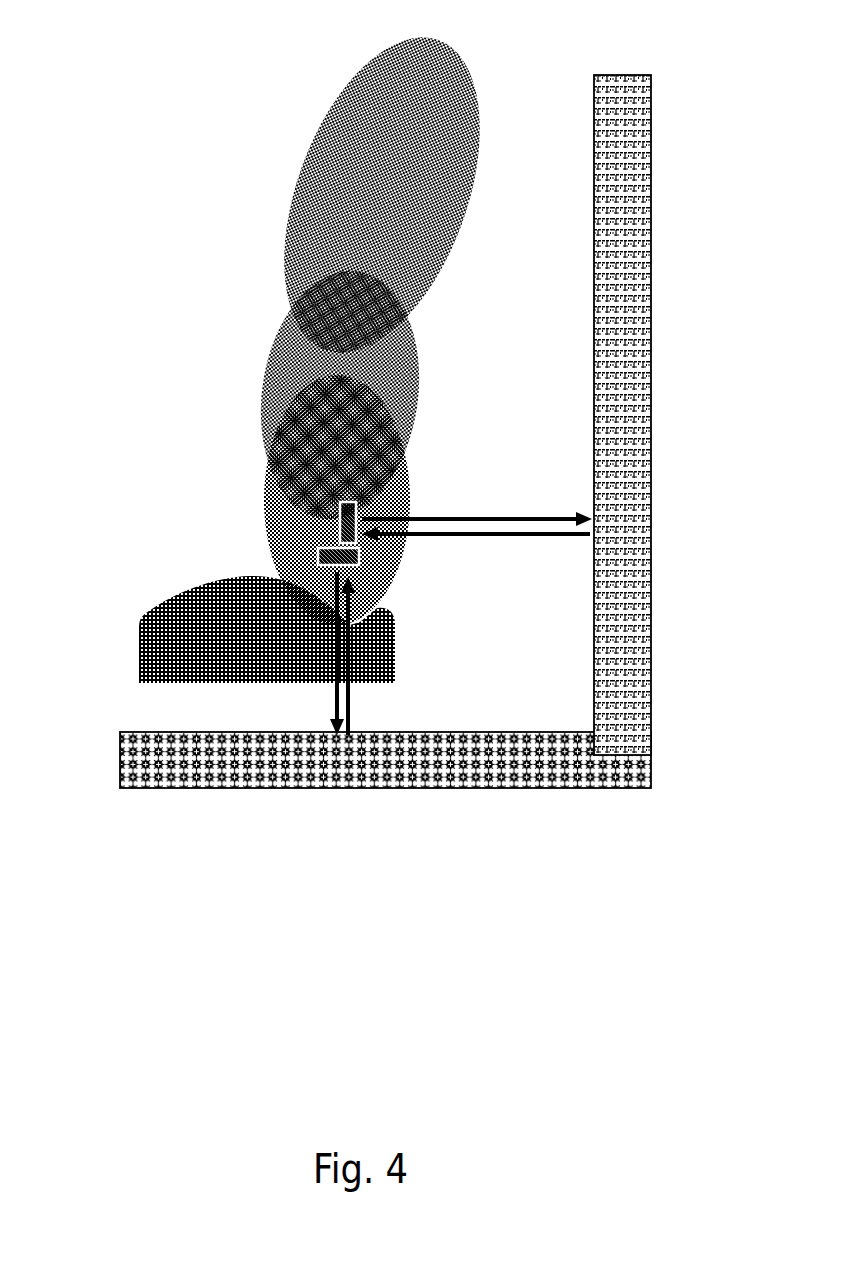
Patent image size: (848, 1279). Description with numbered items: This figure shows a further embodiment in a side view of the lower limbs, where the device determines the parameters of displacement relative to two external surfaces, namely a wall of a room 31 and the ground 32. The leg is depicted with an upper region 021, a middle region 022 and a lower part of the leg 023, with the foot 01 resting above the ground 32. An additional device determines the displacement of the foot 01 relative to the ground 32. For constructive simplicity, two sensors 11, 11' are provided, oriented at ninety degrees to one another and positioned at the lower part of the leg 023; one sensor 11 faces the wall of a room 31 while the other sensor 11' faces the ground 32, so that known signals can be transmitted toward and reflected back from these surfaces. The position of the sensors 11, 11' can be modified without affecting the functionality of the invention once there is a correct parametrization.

The first smoke plume region 021 is at (325, 168).
The second smoke plume region 022 is at (293, 319).
The lower part of the leg 023 is at (288, 462).
The foot 01 is at (160, 630).
The sensor 11 is at (399, 468).
The sensor 11' is at (399, 588).
The wall of a room 31 is at (637, 445).
The ground 32 is at (452, 768).